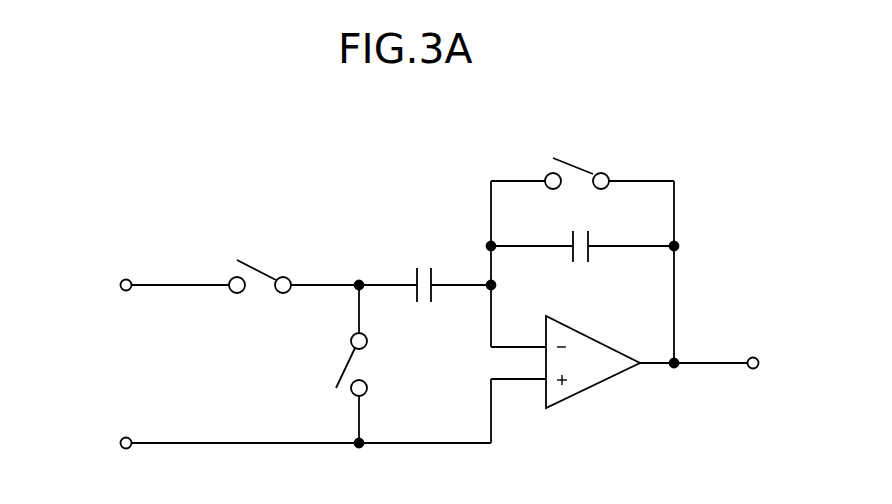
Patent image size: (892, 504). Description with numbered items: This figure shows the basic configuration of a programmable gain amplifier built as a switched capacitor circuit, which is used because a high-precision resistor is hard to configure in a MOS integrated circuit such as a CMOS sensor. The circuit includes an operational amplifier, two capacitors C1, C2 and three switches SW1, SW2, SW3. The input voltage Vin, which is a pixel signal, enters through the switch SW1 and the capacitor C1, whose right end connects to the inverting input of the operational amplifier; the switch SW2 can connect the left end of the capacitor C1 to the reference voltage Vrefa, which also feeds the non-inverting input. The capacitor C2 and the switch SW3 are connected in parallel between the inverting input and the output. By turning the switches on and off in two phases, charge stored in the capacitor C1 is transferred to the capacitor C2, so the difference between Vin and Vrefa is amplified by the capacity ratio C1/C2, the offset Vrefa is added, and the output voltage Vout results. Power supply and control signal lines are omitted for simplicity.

The input voltage Vin is at (147, 285).
The output voltage Vout is at (728, 365).
The reference voltage Vrefa is at (273, 443).
The switch SW1 is at (294, 258).
The switch SW2 is at (382, 364).
The switch SW3 is at (582, 155).
The capacitor C1 is at (425, 268).
The capacitor C2 is at (583, 264).